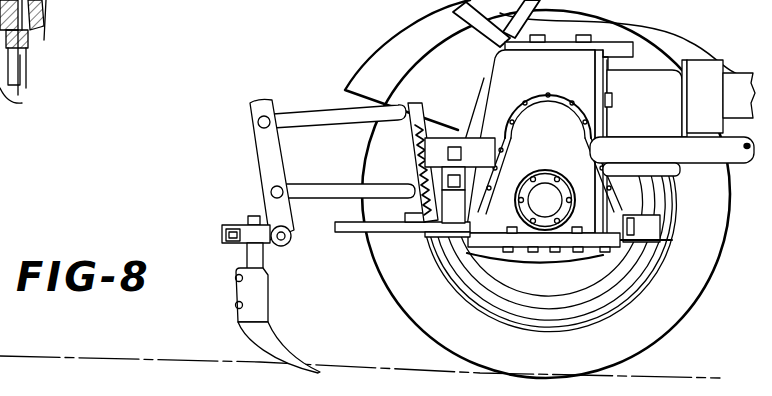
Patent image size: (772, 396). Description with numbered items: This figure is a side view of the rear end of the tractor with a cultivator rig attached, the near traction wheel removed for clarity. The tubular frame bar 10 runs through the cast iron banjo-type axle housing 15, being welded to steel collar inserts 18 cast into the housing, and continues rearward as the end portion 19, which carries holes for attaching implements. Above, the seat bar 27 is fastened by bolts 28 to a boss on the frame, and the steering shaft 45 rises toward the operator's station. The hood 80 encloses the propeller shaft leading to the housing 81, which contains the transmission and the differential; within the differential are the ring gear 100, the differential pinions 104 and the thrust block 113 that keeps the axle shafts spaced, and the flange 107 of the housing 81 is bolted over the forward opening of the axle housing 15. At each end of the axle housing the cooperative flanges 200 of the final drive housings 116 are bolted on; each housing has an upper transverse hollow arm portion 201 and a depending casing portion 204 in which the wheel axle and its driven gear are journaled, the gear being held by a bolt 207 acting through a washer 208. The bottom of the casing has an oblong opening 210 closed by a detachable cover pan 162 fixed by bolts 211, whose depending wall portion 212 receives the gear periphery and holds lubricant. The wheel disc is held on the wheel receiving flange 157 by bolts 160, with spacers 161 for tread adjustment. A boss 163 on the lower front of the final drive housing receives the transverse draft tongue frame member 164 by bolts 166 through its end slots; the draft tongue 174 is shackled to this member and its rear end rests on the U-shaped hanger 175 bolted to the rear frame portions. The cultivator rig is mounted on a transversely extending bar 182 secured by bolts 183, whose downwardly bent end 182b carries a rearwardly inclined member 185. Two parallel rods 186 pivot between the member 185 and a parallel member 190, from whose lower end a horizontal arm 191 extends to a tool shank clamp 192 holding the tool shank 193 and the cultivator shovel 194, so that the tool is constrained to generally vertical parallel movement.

The tubular frame bar 10 is at (698, 150).
The axle housing 15 is at (294, 9).
The steel collar inserts 18 is at (134, 6).
The rear end portion of tubular frame member 19 is at (467, 140).
The seat bar 27 is at (500, 38).
The bolts 28 is at (584, 36).
The steering shaft 45 is at (530, 141).
The hood 80 is at (742, 97).
The housing 81 is at (653, 84).
The ring gear 100 is at (272, 0).
The differential pinions 104 is at (263, 39).
The flange 107 is at (598, 118).
The thrust block 113 is at (359, 9).
The final drive housings 116 is at (612, 258).
The wheel receiving flange 157 is at (553, 199).
The bolts 160 is at (526, 181).
The spacers 161 is at (547, 172).
The cover pan 162 is at (537, 260).
The boss 163 is at (660, 213).
The draft tongue frame member 164 is at (646, 228).
The bolts 166 is at (648, 240).
The draft tongue 174 is at (370, 231).
The hanger 175 is at (438, 236).
The transversely extending bar 182 is at (420, 145).
The downwardly bent end 182b is at (364, 236).
The bolts 183 is at (420, 118).
The member 185 is at (410, 162).
The parallel rods 186 is at (325, 118).
The member 190 is at (268, 156).
The horizontal arm 191 is at (282, 241).
The tool shank clamp 192 is at (240, 233).
The tool shank 193 is at (255, 257).
The cultivator shovel 194 is at (256, 303).
The cooperative flanges 200 is at (532, 92).
The upper transverse hollow arm portion 201 is at (560, 110).
The depending casing portion 204 is at (600, 172).
The bolt 207 is at (36, 5).
The washer 208 is at (25, 42).
The oblong opening 210 is at (8, 92).
The bolts 211 is at (513, 258).
The depending wall portion 212 is at (531, 268).